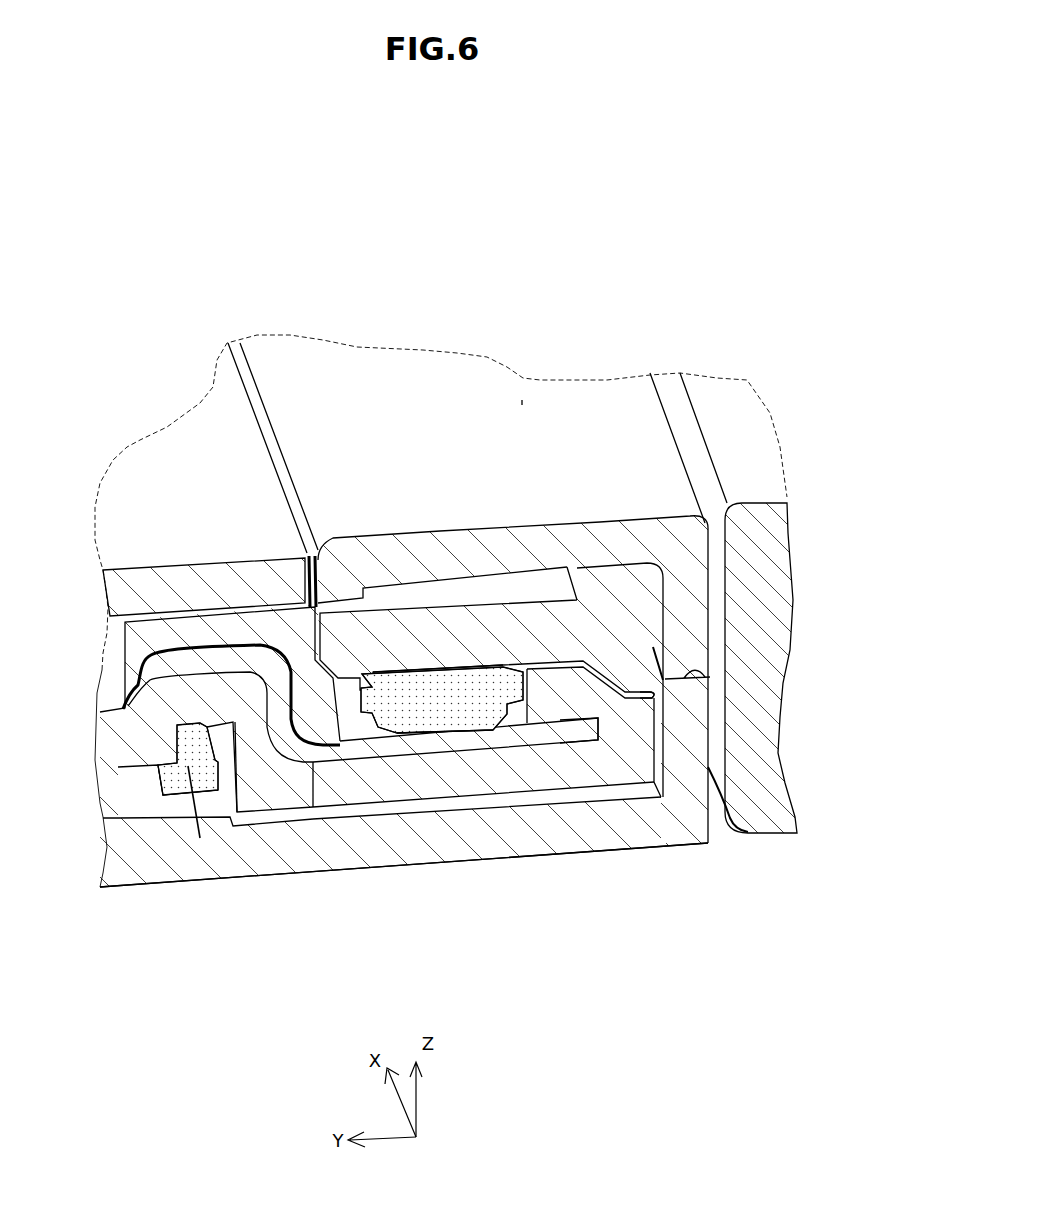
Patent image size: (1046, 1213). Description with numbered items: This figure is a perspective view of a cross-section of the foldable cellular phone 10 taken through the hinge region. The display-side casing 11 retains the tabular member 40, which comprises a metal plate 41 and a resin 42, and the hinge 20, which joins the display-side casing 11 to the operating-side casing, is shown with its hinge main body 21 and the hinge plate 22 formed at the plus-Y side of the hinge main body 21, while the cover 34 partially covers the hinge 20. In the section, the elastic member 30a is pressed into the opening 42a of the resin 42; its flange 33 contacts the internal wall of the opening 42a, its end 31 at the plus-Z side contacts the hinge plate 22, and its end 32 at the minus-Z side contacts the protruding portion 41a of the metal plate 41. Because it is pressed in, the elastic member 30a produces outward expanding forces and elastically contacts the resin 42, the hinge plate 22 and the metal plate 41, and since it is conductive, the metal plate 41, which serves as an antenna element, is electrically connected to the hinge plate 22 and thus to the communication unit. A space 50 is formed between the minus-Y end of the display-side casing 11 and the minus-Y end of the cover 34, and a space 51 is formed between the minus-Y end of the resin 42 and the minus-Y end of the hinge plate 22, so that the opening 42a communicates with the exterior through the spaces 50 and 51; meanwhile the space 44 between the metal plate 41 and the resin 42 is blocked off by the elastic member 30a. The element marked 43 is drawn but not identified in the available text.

The cellular phone 10 is at (737, 210).
The display-side casing 11 is at (140, 900).
The hinge 20 is at (570, 410).
The hinge main body 21 is at (760, 560).
The hinge plate 22 is at (606, 613).
The elastic member 30a is at (418, 650).
The end 31 is at (450, 690).
The end 32 is at (443, 713).
The flange 33 is at (385, 785).
The cover 34 is at (515, 530).
The tabular member 40 is at (492, 768).
The metal plate 41 is at (417, 748).
The protruding portion 41a is at (562, 740).
The resin 42 is at (345, 790).
The opening 42a is at (533, 682).
The lead plate 43 is at (237, 605).
The space 44 is at (302, 805).
The space 50 is at (700, 683).
The space 51 is at (653, 695).